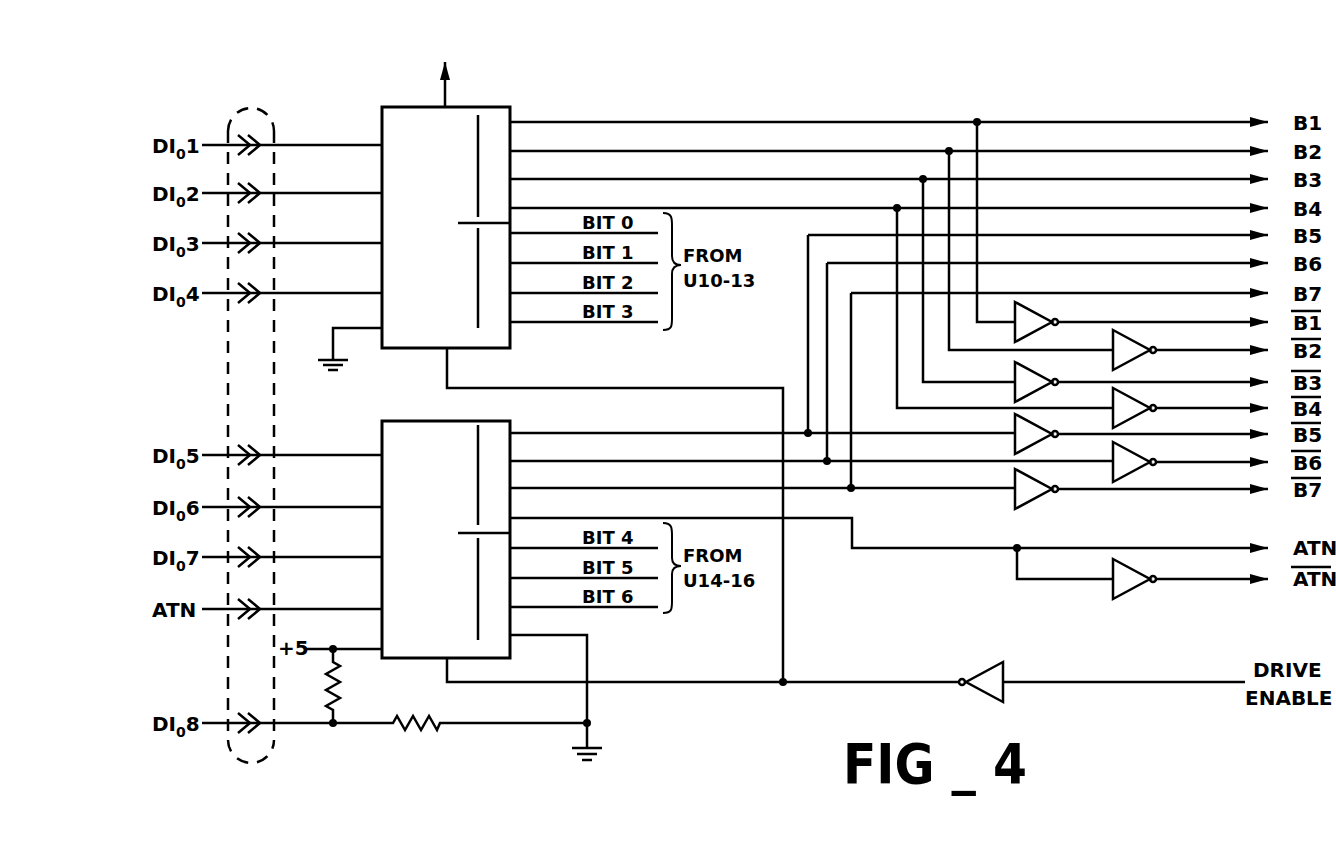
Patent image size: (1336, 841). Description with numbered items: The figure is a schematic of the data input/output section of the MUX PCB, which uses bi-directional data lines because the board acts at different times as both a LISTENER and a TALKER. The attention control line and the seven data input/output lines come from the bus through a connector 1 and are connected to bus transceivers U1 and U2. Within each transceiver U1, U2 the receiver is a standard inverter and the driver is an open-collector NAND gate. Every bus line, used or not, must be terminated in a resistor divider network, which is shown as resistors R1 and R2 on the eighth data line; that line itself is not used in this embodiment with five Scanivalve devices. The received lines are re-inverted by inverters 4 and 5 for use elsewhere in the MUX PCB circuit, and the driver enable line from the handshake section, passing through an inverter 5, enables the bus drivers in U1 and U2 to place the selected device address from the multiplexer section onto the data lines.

The connector 1 is at (257, 104).
The inverter (U4) 4 is at (1141, 392).
The inverter (U5) 5 is at (1113, 585).
The bus transceiver U1 is at (414, 201).
The bus transceiver U2 is at (446, 539).
The resistor R1 is at (354, 686).
The resistor R2 is at (394, 742).